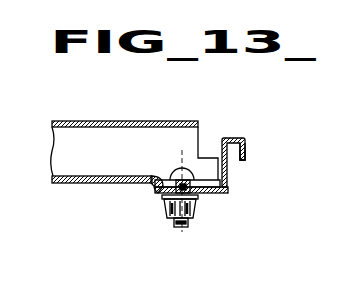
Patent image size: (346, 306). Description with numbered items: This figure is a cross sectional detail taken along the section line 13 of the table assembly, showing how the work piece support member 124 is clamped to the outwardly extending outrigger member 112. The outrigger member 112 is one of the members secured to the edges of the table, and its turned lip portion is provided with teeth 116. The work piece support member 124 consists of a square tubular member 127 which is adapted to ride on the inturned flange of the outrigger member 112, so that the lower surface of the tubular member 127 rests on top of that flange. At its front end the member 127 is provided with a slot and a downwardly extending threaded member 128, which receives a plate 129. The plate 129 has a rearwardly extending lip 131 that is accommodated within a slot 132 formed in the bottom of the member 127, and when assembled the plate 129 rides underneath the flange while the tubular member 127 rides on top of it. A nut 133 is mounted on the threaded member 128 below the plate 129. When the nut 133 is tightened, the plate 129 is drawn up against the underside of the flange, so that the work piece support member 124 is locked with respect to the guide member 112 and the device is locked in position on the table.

The section line 13 is at (253, 146).
The outrigger member 112 is at (231, 139).
The teeth 116 is at (247, 164).
The work piece support member 124 is at (112, 121).
The square member 127 is at (130, 134).
The threaded member 128 is at (183, 229).
The plate 129 is at (205, 196).
The lip 131 is at (149, 176).
The slot 132 is at (151, 187).
The nut 133 is at (164, 213).